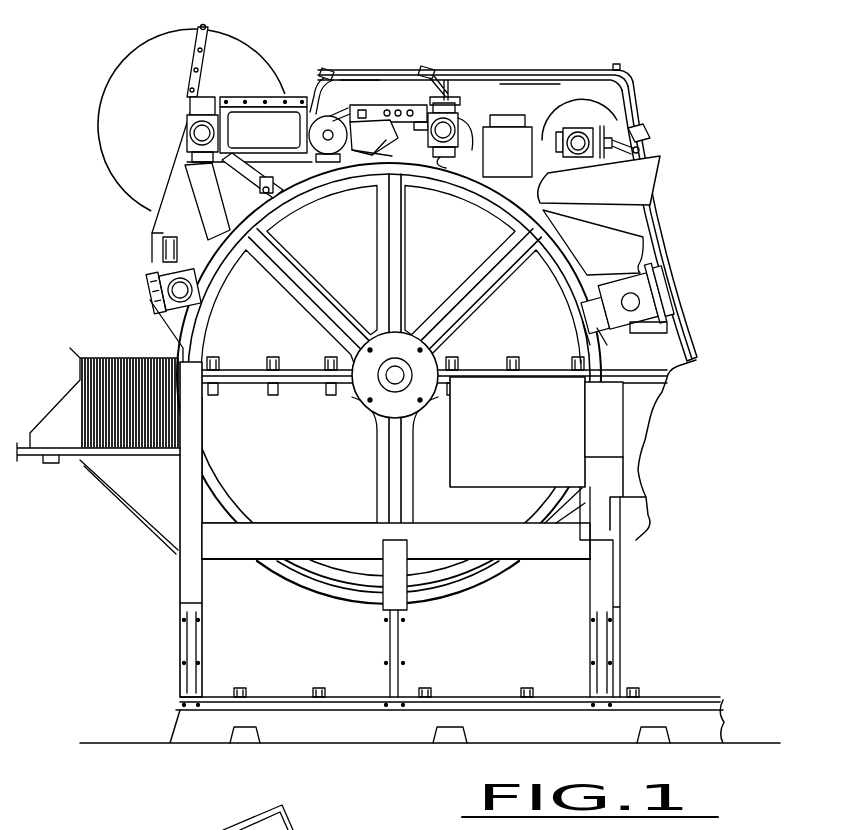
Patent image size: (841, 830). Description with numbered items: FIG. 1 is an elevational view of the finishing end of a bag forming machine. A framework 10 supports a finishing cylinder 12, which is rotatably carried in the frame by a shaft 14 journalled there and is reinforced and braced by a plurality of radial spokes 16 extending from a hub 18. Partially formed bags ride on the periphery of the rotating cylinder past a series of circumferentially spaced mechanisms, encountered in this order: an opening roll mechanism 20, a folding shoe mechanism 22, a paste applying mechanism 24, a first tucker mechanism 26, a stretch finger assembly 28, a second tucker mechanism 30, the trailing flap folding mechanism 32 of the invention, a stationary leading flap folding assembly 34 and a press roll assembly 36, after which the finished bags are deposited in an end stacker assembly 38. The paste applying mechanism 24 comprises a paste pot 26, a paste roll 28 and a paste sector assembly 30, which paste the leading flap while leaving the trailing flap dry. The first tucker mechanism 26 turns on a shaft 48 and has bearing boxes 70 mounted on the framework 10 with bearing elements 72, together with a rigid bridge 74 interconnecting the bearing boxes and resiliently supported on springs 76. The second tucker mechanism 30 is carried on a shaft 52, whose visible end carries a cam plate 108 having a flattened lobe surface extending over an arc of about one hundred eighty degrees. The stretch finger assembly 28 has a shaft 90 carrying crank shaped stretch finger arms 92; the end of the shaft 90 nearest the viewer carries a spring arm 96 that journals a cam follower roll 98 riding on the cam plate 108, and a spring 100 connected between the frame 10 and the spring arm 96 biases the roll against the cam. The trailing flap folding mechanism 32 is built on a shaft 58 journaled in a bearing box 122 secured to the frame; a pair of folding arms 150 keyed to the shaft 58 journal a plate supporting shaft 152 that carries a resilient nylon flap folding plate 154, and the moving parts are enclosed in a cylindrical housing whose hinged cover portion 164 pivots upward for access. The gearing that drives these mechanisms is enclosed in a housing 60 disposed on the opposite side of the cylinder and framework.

The framework 10 is at (207, 200).
The finishing cylinder 12 is at (317, 588).
The shaft 14 is at (393, 386).
The spokes 16 is at (322, 282).
The hub 18 is at (353, 403).
The opening roll mechanism 20 is at (674, 289).
The folding shoe mechanism 22 is at (668, 244).
The paste applying mechanism 24 is at (541, 88).
The first tucker mechanism 26 is at (459, 76).
The stretch finger assembly 28 is at (398, 92).
The second tucker mechanism 30 is at (350, 79).
The trailing flap folding mechanism 32 is at (238, 34).
The leading flap folding assembly 34 is at (168, 247).
The press roll assembly 36 is at (160, 304).
The end stacker assembly 38 is at (76, 464).
The shaft 48 is at (458, 122).
The shaft 52 is at (324, 124).
The shaft 58 is at (190, 133).
The housing 60 is at (586, 75).
The bearing boxes 70 is at (460, 140).
The bearing elements 72 is at (443, 148).
The rigid bridge 74 is at (452, 74).
The springs 76 is at (420, 113).
The shaft 90 is at (388, 111).
The stretch finger arms 92 is at (386, 126).
The spring arm 96 is at (364, 110).
The cam follower roll 98 is at (350, 74).
The spring 100 is at (372, 141).
The cam plate 108 is at (310, 136).
The bearing box 122 is at (216, 128).
The folding arms 150 is at (258, 190).
The plate supporting shaft 152 is at (164, 826).
The flap folding plate 154 is at (276, 183).
The hinged cover portion 164 is at (165, 108).